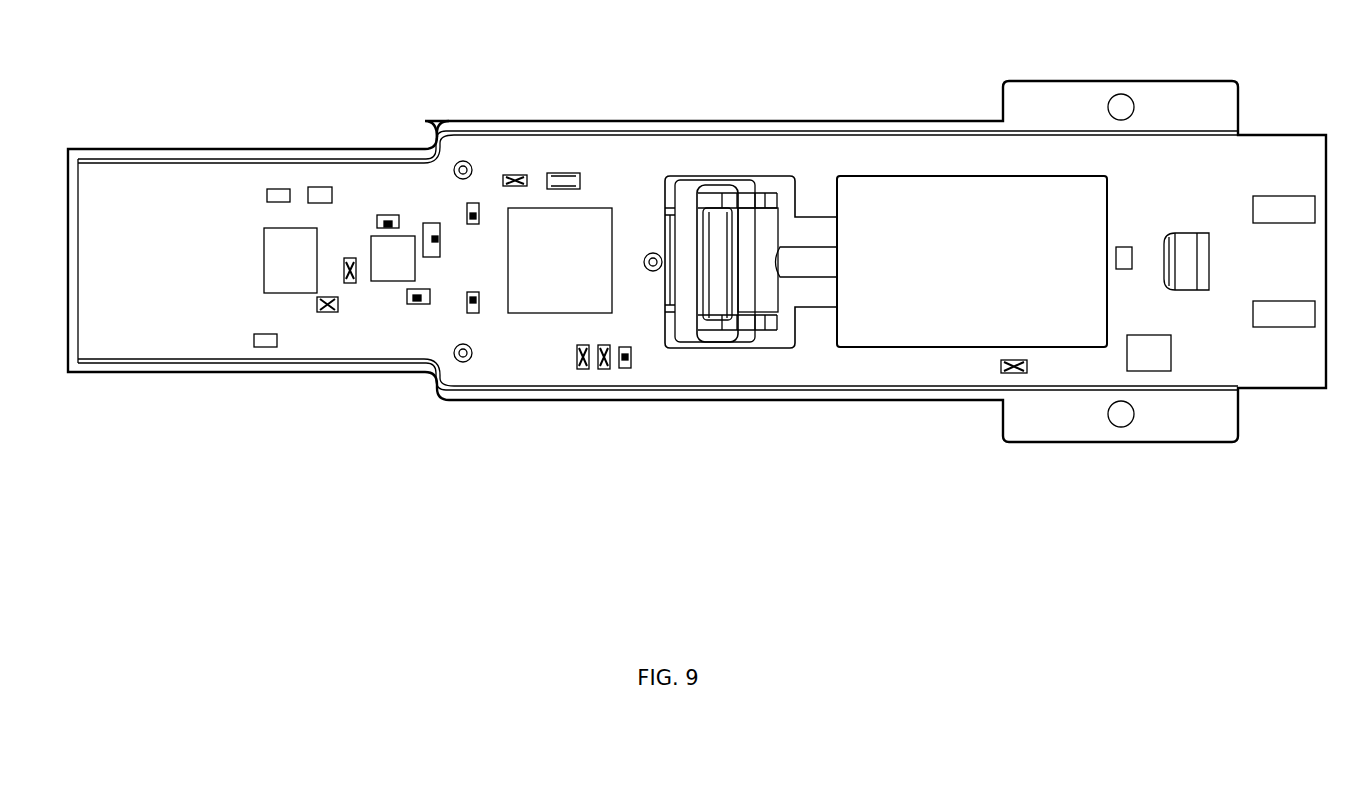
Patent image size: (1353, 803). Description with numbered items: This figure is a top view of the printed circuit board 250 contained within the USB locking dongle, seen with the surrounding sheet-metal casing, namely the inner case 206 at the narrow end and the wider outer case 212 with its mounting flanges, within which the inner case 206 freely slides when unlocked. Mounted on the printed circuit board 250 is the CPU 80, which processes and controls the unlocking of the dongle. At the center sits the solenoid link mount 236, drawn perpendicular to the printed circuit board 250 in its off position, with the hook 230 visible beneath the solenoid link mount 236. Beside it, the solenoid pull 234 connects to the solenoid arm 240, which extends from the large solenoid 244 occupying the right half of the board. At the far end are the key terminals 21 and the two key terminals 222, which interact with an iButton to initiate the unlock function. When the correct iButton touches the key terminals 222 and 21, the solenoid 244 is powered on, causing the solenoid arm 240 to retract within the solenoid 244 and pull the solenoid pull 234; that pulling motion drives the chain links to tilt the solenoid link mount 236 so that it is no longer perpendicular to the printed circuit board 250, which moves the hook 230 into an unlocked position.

The inner case 206 is at (236, 363).
The outer case 212 is at (926, 398).
The printed circuit board 250 is at (521, 367).
The CPU 80 is at (560, 260).
The solenoid 244 is at (972, 261).
The hook 230 is at (683, 198).
The solenoid link mount 236 is at (718, 182).
The solenoid pull 234 is at (765, 300).
The solenoid arm 240 is at (808, 257).
The key terminals 21 is at (1184, 277).
The key terminals 222 is at (1279, 315).